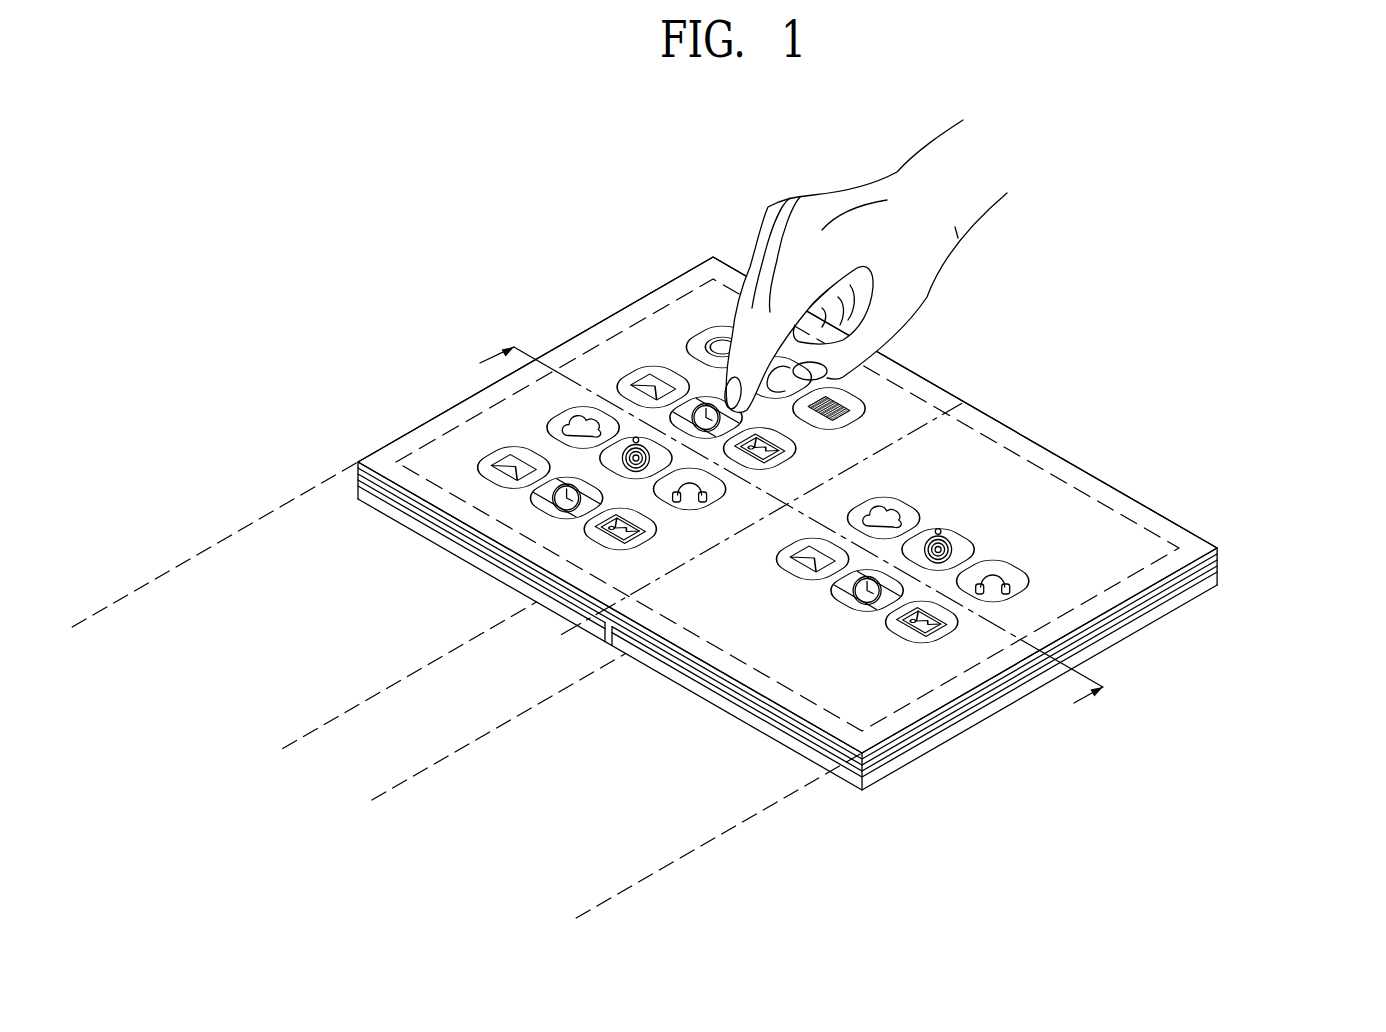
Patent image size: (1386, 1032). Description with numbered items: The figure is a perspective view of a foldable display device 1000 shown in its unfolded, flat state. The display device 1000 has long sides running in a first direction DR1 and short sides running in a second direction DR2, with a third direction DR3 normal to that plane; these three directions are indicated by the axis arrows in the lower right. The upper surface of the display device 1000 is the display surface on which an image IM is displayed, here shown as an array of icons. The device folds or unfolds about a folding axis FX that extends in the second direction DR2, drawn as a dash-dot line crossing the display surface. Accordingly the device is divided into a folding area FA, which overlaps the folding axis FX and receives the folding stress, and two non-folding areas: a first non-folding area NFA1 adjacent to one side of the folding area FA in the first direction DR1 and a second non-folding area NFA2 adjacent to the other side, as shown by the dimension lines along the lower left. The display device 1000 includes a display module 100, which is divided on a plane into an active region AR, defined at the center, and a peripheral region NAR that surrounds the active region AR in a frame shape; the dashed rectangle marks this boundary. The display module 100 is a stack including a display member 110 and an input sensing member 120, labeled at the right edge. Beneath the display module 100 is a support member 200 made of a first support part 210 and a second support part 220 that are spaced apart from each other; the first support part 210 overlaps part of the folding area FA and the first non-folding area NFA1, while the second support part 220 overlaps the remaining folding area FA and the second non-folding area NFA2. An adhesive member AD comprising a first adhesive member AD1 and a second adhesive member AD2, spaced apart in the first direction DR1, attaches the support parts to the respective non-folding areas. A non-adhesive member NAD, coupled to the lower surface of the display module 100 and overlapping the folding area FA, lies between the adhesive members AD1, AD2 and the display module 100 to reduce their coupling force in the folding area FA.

The display device 1000 is at (1163, 337).
The display module 100 is at (866, 523).
The display member 110 is at (1218, 561).
The input sensing member 120 is at (1218, 548).
The support member 200 is at (787, 631).
The first support part 210 is at (906, 674).
The second support part 220 is at (573, 612).
The image IM is at (493, 447).
The folding axis FX is at (964, 402).
The active region AR is at (1034, 506).
The peripheral region NAR is at (1118, 500).
The adhesive member AD is at (719, 661).
The first adhesive member AD1 is at (895, 698).
The second adhesive member AD2 is at (433, 523).
The non-adhesive member NAD is at (547, 588).
The folding area FA is at (372, 800).
The first non-folding area NFA1 is at (576, 918).
The second non-folding area NFA2 is at (283, 748).
The first direction DR1 is at (1160, 880).
The second direction DR2 is at (1160, 880).
The third direction DR3 is at (1160, 880).